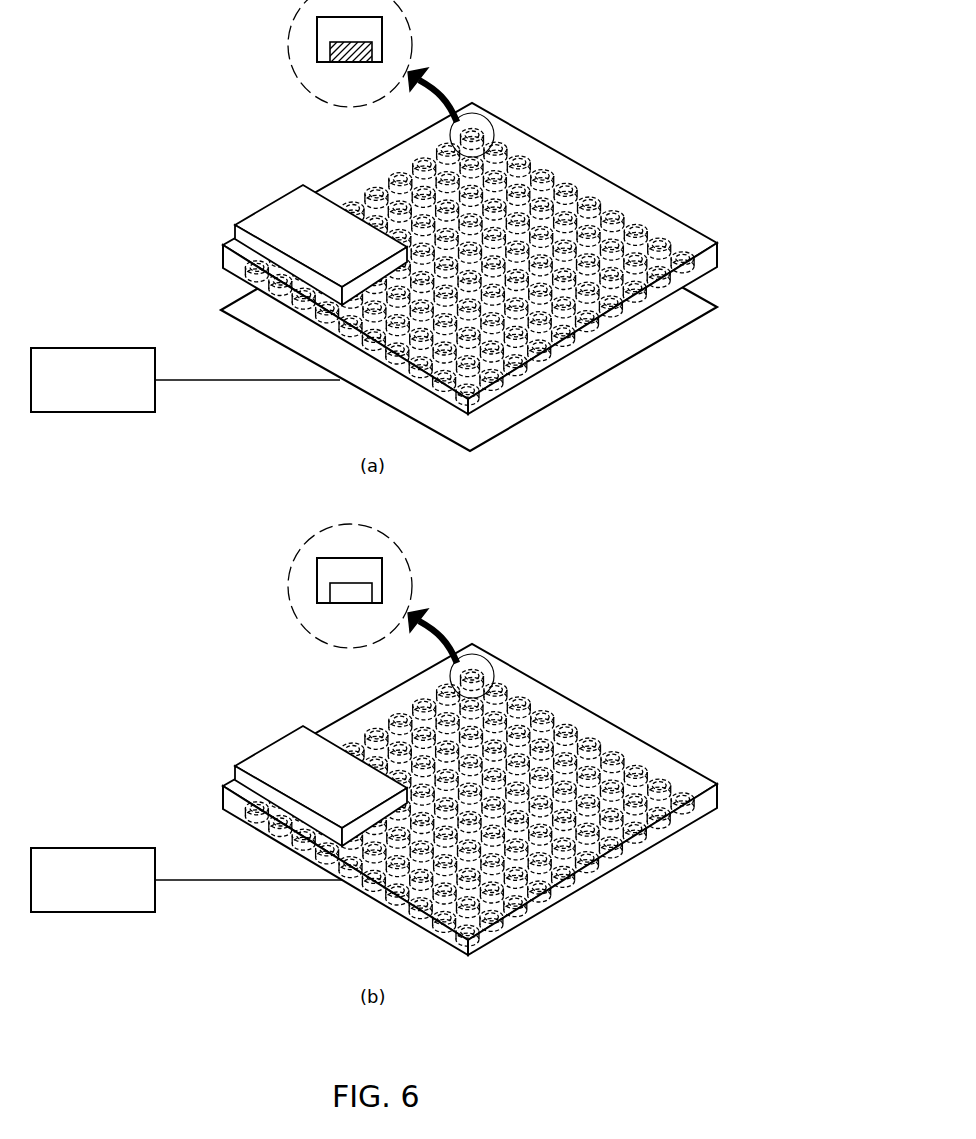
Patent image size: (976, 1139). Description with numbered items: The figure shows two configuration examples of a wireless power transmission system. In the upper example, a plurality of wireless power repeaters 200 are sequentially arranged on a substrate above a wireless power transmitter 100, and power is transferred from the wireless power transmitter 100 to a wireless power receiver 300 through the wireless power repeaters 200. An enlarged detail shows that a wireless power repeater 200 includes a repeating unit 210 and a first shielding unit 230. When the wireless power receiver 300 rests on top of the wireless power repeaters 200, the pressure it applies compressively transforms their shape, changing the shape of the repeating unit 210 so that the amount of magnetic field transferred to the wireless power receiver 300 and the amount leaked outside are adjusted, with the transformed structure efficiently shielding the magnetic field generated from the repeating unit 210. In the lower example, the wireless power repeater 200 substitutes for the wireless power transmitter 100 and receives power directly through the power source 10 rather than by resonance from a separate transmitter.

The power source 10 is at (89, 347).
The wireless power transmitter 100 is at (590, 381).
The wireless power repeater 200 is at (415, 30).
The repeating unit 210 is at (330, 54).
The first shielding unit 230 is at (317, 30).
The wireless power receiver 300 is at (268, 213).